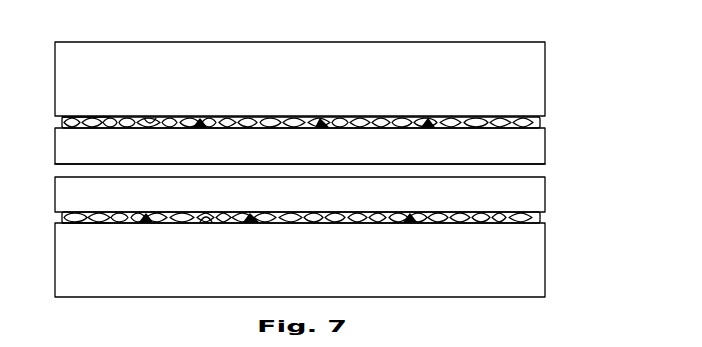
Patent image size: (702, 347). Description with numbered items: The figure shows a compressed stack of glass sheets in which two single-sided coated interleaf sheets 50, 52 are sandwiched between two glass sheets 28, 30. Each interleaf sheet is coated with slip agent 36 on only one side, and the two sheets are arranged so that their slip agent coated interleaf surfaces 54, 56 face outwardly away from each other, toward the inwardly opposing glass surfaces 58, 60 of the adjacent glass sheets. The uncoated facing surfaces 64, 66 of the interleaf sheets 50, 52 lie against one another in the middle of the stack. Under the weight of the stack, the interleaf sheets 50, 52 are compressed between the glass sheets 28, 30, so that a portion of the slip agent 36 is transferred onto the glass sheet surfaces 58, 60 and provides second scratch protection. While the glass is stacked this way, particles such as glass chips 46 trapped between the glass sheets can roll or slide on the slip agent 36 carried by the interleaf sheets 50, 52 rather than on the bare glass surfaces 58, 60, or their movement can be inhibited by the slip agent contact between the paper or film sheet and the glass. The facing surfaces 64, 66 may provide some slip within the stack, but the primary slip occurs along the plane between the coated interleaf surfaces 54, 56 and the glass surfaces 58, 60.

The glass sheet 28 is at (524, 66).
The glass sheet 30 is at (513, 287).
The slip agent 36 is at (540, 123).
The glass chips 46 is at (324, 121).
The interleaf sheet 50 is at (525, 146).
The interleaf sheet 52 is at (530, 190).
The slip agent coated interleaf surface 54 is at (95, 126).
The slip agent coated interleaf surface 56 is at (100, 222).
The glass sheet surface 58 is at (150, 123).
The glass sheet surface 60 is at (205, 216).
The facing surface of interleaf sheet 64 is at (530, 163).
The facing surface of interleaf sheet 66 is at (88, 176).